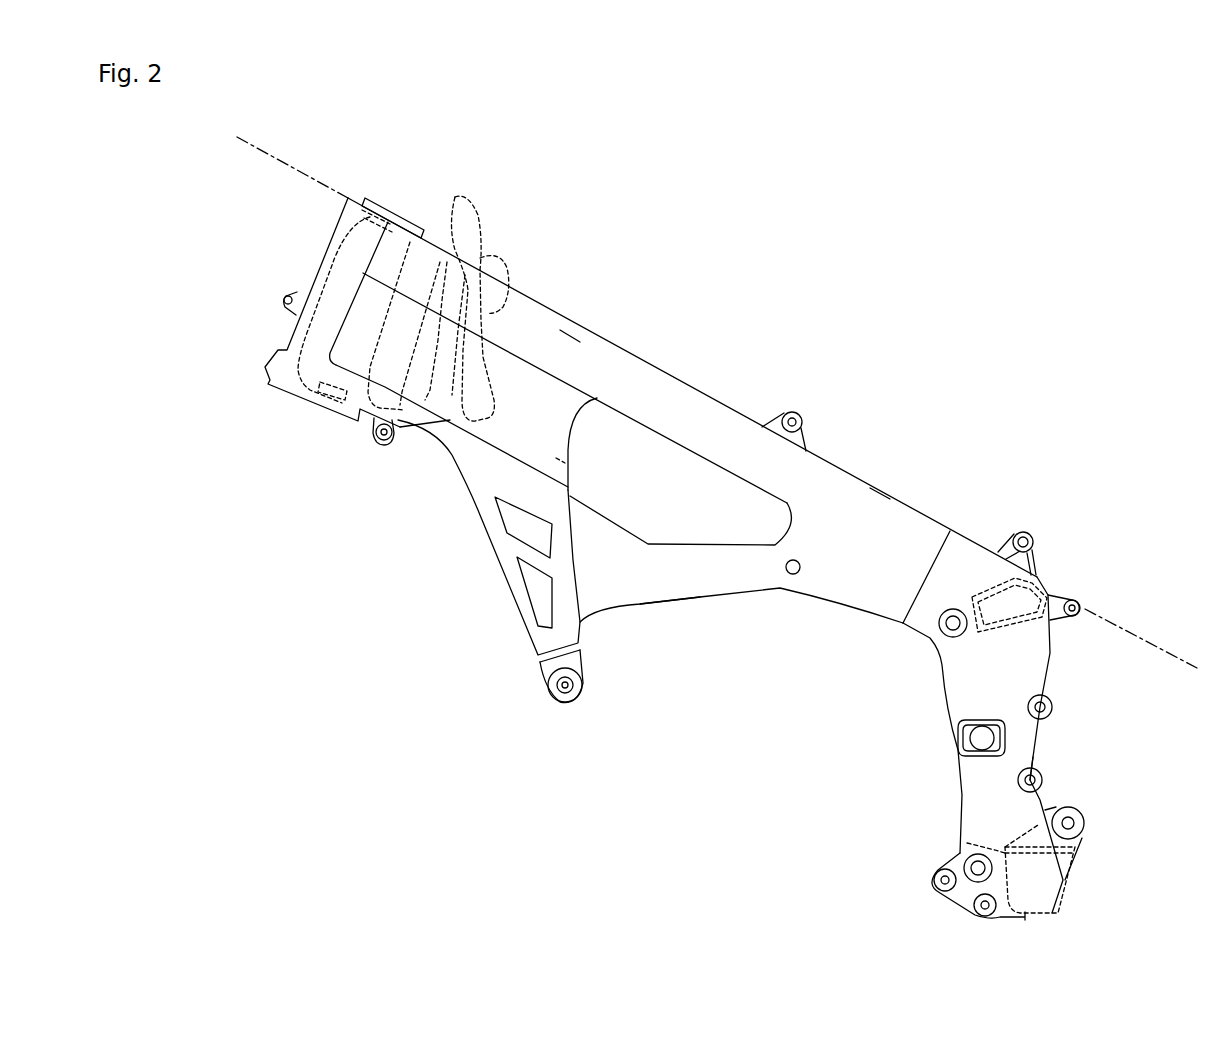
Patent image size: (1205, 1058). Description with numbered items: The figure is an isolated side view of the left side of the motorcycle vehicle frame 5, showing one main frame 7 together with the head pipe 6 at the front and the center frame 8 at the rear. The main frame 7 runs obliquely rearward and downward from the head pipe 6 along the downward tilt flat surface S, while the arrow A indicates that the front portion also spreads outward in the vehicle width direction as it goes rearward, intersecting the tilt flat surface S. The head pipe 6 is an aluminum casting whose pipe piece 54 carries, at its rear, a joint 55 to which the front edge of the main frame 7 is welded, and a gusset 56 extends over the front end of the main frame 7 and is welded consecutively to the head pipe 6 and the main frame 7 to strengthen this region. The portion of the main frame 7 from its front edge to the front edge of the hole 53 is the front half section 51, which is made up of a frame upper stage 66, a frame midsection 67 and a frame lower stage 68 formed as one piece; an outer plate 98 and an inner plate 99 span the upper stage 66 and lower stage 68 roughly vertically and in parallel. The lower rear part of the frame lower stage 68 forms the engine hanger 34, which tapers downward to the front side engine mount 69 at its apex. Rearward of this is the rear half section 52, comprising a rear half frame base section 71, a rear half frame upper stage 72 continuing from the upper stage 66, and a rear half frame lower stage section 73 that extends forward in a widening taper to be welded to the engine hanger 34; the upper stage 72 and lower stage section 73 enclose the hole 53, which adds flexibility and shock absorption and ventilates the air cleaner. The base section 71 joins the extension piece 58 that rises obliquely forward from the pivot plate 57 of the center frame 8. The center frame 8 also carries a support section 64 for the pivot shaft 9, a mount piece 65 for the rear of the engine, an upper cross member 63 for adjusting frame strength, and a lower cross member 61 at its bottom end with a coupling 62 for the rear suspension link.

The vehicle frame 5 is at (861, 258).
The head pipe 6 is at (387, 337).
The main frame 7 is at (728, 350).
The center frame 8 is at (1075, 667).
The pivot shaft 9 is at (978, 738).
The engine hanger 34 is at (490, 557).
The front half section 51 is at (570, 310).
The rear half section 52 is at (851, 465).
The hole 53 is at (690, 547).
The pipe piece 54 is at (313, 277).
The joint 55 is at (456, 245).
The gusset 56 is at (492, 297).
The pivot plate 57 is at (1036, 747).
The extension piece 58 is at (927, 627).
The lower cross member 61 is at (967, 843).
The coupling 62 is at (1084, 824).
The upper cross member 63 is at (977, 590).
The support section 64 is at (978, 724).
The mount piece 65 is at (937, 642).
The frame upper stage 66 is at (530, 318).
The frame midsection 67 is at (562, 385).
The frame lower stage 68 is at (440, 437).
The front side engine mount 69 is at (550, 705).
The rear half frame base section 71 is at (880, 493).
The rear half frame upper stage 72 is at (742, 416).
The rear half frame lower stage section 73 is at (647, 596).
The outer plate 98 is at (558, 432).
The inner plate 99 is at (560, 462).
The tilt flat surface S is at (322, 184).
The arrow A is at (505, 220).